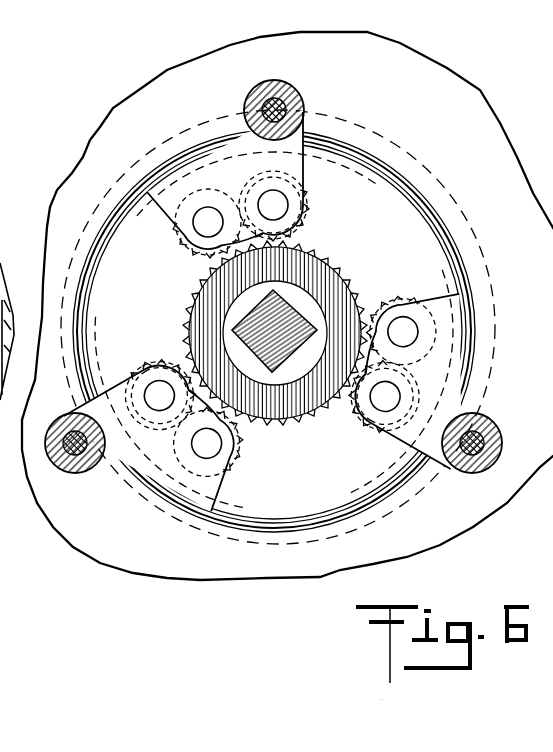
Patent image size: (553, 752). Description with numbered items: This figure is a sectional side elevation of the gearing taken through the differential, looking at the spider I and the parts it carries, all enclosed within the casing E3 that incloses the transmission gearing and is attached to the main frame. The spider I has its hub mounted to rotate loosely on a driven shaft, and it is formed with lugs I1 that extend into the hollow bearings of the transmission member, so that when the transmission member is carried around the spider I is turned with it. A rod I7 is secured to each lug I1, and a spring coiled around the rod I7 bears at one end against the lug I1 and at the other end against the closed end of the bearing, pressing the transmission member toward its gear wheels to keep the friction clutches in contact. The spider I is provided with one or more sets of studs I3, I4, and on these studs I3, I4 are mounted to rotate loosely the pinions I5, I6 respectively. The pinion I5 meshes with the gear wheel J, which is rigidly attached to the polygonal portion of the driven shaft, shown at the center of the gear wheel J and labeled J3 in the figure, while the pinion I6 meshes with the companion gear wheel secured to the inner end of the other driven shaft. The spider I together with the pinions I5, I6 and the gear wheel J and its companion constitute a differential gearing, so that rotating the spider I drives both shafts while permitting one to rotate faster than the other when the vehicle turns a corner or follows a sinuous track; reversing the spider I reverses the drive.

The casing E3 is at (276, 306).
The spider I is at (412, 143).
The lugs I1 is at (280, 314).
The stud I3 is at (283, 202).
The stud I4 is at (299, 338).
The pinion I5 is at (313, 218).
The pinion I6 is at (277, 348).
The rod I7 is at (289, 289).
The gear wheel J is at (276, 332).
The square shaft J3 is at (274, 315).